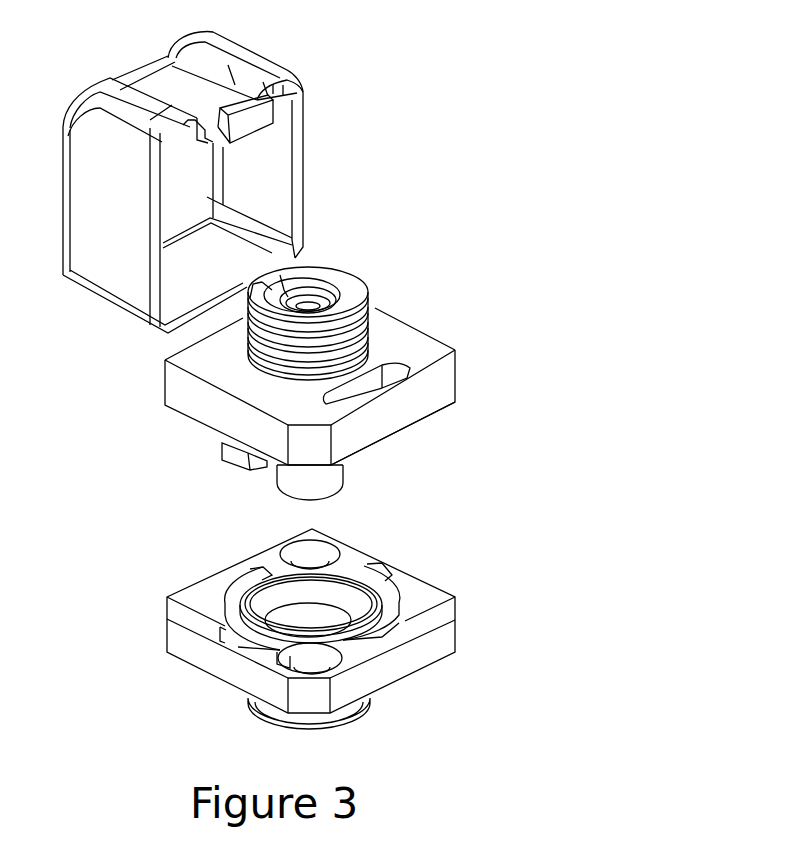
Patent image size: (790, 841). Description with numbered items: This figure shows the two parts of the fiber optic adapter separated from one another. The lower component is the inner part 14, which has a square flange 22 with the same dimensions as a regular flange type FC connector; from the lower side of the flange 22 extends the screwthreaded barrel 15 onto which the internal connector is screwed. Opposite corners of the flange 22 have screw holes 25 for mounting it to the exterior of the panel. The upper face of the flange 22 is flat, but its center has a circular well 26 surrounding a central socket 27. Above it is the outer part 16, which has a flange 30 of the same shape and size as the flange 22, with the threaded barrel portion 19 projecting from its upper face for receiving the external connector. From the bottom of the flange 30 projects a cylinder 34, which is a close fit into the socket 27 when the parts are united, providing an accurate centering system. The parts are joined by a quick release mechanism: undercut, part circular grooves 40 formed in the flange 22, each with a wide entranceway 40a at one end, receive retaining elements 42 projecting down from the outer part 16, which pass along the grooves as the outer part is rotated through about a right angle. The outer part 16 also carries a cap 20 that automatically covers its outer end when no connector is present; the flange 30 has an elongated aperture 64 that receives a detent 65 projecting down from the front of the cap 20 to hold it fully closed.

The inner part 14 is at (458, 592).
The barrel 15 is at (353, 717).
The outer part 16 is at (447, 333).
The threaded barrel portion 19 is at (325, 267).
The cap 20 is at (265, 196).
The square flange 22 is at (198, 605).
The screw holes 25 is at (307, 563).
The circular well 26 is at (353, 592).
The central socket 27 is at (310, 620).
The flange 30 is at (397, 340).
The cylinder 34 is at (327, 480).
The grooves 40 is at (233, 620).
The entranceway 40a is at (240, 637).
The retaining elements 42 is at (235, 468).
The elongated aperture 64 is at (452, 345).
The detent 65 is at (307, 90).